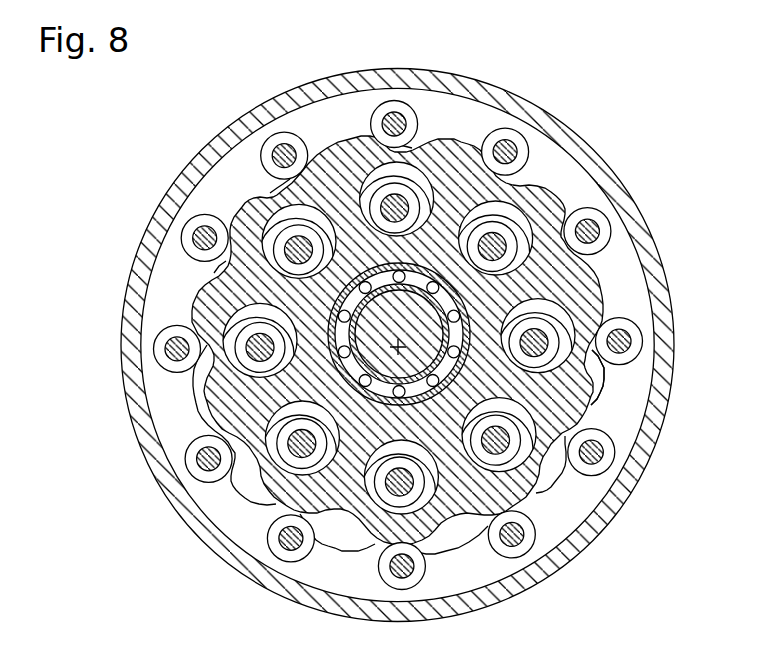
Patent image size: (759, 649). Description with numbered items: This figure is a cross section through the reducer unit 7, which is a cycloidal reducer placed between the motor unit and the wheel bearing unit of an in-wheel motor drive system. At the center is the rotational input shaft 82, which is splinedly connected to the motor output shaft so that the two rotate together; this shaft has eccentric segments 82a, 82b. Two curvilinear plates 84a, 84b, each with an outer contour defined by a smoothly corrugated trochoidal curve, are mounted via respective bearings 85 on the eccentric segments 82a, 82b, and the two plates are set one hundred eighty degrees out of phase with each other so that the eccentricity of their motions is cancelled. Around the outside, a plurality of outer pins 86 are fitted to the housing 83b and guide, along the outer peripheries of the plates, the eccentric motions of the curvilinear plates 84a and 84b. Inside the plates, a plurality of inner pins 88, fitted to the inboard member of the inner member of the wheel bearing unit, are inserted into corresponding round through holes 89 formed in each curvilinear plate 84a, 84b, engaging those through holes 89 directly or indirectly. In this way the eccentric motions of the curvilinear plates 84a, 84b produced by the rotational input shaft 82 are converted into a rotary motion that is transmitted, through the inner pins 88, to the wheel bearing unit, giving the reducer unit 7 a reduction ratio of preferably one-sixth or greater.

The reducer unit 7 is at (204, 134).
The rotational input shaft 82 is at (48, 395).
The eccentric segment 82a is at (205, 418).
The eccentric segment 82b is at (337, 375).
The housing 83b is at (170, 203).
The curvilinear plate 84a is at (594, 279).
The curvilinear plate 84b is at (540, 197).
The bearing 85 is at (340, 297).
The outer pin 86 is at (385, 123).
The inner pin 88 is at (491, 240).
The through hole 89 is at (560, 307).